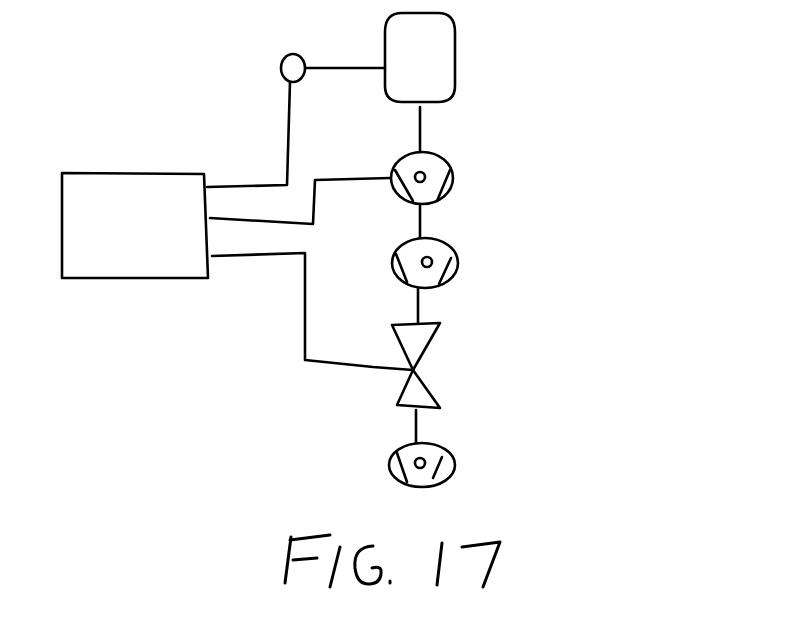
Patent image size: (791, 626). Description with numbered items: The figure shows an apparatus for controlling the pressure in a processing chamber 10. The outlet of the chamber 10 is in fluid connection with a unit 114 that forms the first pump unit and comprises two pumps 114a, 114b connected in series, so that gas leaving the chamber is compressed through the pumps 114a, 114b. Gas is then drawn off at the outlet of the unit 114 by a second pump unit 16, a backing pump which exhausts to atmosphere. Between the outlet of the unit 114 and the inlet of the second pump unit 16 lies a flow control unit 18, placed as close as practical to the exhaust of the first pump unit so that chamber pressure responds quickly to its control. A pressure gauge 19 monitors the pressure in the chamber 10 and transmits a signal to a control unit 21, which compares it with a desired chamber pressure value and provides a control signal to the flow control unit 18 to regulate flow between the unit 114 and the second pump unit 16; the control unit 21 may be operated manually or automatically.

The chamber 10 is at (433, 65).
The pressure gauge 19 is at (283, 58).
The control unit 21 is at (111, 223).
The unit 114 is at (545, 210).
The pump 114a is at (448, 165).
The pump 114b is at (477, 268).
The flow control unit 18 is at (430, 338).
The second pump unit 16 is at (462, 463).